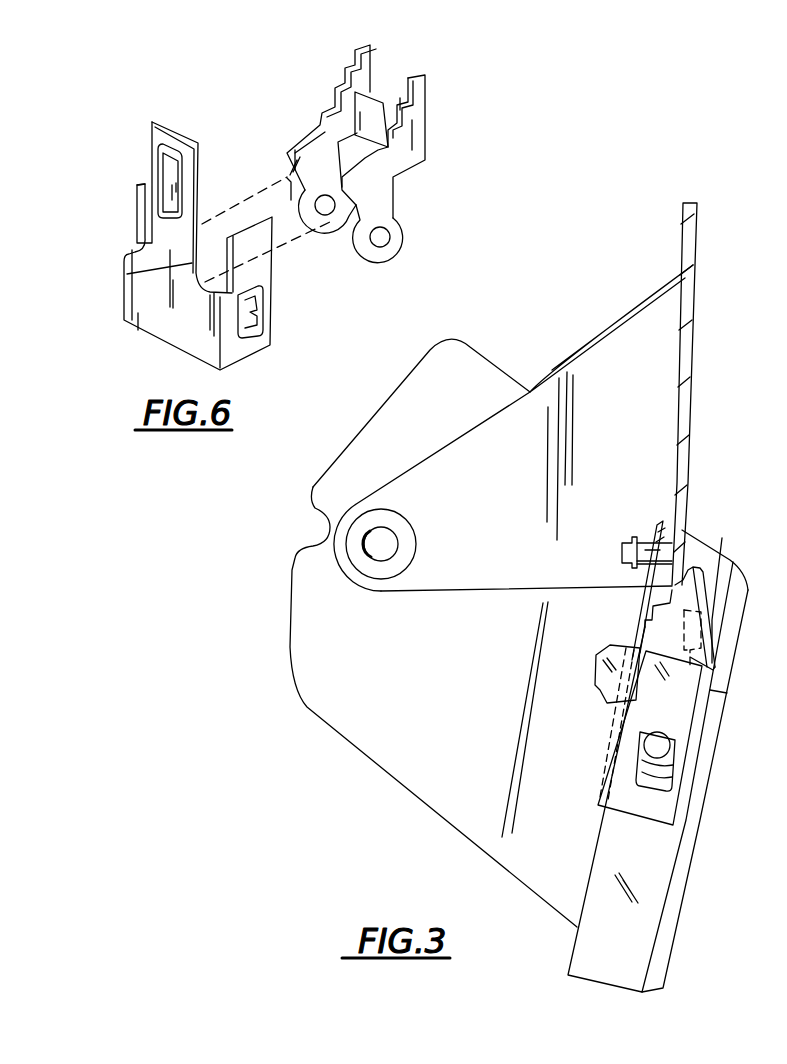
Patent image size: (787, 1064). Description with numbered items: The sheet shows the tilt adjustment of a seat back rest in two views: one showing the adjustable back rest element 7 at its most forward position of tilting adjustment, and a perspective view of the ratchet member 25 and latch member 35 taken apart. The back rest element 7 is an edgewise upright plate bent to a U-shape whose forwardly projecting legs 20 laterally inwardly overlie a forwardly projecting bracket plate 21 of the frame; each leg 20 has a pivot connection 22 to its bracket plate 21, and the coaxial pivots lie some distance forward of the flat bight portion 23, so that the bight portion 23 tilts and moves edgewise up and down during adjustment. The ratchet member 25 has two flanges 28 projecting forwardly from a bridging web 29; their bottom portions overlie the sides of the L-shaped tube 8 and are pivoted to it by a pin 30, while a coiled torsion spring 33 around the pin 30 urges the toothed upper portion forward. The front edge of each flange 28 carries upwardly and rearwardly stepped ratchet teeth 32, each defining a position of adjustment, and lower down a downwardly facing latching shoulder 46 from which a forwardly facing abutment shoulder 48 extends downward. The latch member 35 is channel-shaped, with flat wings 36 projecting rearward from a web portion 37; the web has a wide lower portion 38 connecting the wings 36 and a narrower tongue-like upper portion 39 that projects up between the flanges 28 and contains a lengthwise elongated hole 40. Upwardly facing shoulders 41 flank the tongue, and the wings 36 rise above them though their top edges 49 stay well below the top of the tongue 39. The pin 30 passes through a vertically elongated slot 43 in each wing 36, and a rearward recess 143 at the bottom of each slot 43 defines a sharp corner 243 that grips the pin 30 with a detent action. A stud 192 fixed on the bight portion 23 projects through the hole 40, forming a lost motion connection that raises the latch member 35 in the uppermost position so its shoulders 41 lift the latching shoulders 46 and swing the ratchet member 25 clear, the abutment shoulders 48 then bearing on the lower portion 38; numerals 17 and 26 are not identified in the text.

In FIG. 3, the adjustable back rest element 7 is at (695, 246).
In FIG. 3, the L-shaped tube 8 is at (583, 893).
In FIG. 3, the hook surface 17 is at (713, 554).
In FIG. 3, the leg 20 is at (338, 575).
In FIG. 3, the bracket plate 21 is at (310, 487).
In FIG. 3, the pivot connection 22 is at (378, 544).
In FIG. 3, the bight portion 23 is at (692, 320).
In FIG. 6, the ratchet member 25 is at (424, 122).
In FIG. 3, the ratchet member 25 is at (705, 560).
In FIG. 3, the hook tab 26 is at (690, 592).
In FIG. 6, the flange 28 is at (325, 120).
In FIG. 6, the bridging web 29 is at (380, 95).
In FIG. 3, the bridging web 29 is at (690, 617).
In FIG. 3, the pin 30 is at (662, 748).
In FIG. 6, the ratchet teeth 32 is at (330, 104).
In FIG. 3, the ratchet teeth 32 is at (645, 618).
In FIG. 3, the coiled torsion spring 33 is at (630, 752).
In FIG. 6, the latch member 35 is at (163, 117).
In FIG. 3, the latch member 35 is at (657, 523).
In FIG. 6, the wing 36 is at (137, 205).
In FIG. 6, the web portion 37 is at (163, 318).
In FIG. 6, the lower portion 38 is at (125, 268).
In FIG. 6, the upper portion 39 is at (152, 166).
In FIG. 6, the hole 40 is at (160, 152).
In FIG. 3, the hole 40 is at (662, 598).
In FIG. 6, the shoulder 41 is at (136, 240).
In FIG. 6, the slot 43 is at (268, 335).
In FIG. 3, the slot 43 is at (650, 786).
In FIG. 6, the latching shoulder 46 is at (345, 240).
In FIG. 3, the latching shoulder 46 is at (600, 700).
In FIG. 6, the abutment shoulder 48 is at (285, 181).
In FIG. 3, the abutment shoulder 48 is at (600, 705).
In FIG. 6, the top edge 49 is at (140, 185).
In FIG. 6, the recess 143 is at (270, 322).
In FIG. 3, the stud 192 is at (626, 540).
In FIG. 6, the corner 243 is at (262, 295).